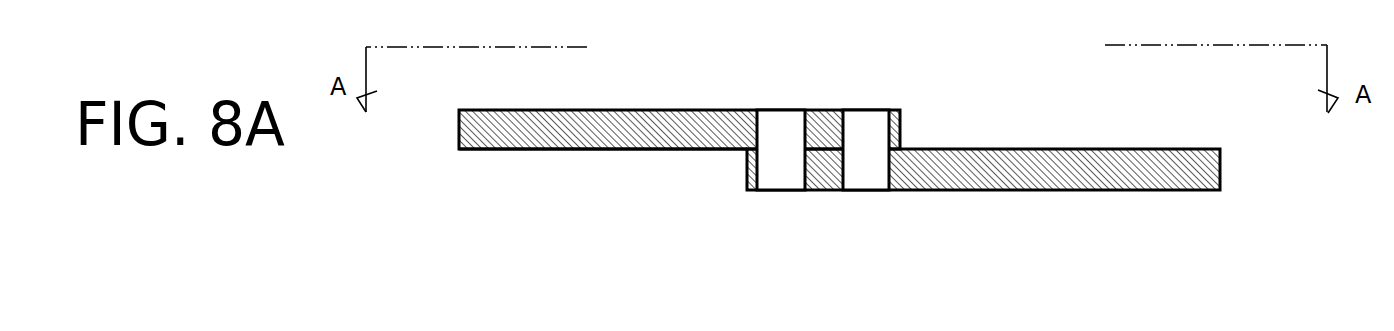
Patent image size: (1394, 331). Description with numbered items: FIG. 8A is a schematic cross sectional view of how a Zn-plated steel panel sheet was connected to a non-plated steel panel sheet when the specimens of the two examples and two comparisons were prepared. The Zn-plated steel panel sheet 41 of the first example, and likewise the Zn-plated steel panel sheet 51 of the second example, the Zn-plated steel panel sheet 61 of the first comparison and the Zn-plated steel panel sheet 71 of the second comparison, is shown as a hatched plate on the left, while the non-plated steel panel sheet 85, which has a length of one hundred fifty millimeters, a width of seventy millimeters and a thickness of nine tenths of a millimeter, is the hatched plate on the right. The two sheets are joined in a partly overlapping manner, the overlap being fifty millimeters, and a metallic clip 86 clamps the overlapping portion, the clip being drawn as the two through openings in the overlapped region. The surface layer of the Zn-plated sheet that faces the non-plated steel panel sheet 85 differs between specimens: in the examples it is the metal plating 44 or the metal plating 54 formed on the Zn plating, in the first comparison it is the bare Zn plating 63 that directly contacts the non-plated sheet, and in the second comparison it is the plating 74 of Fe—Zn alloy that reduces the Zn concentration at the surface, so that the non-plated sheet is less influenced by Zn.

The Zn-plated steel panel sheet 41 is at (679, 81).
The Zn-plated steel panel sheet 51 is at (679, 81).
The Zn-plated steel panel sheet 61 is at (679, 81).
The Zn-plated steel panel sheet 71 is at (667, 96).
The metal plating 44 is at (603, 198).
The metal plating 54 is at (603, 198).
The Zn plating 63 is at (603, 198).
The plating of Fe alloy 74 is at (585, 164).
The non-plated steel panel sheet 85 is at (1010, 149).
The metallic clip 86 is at (863, 108).